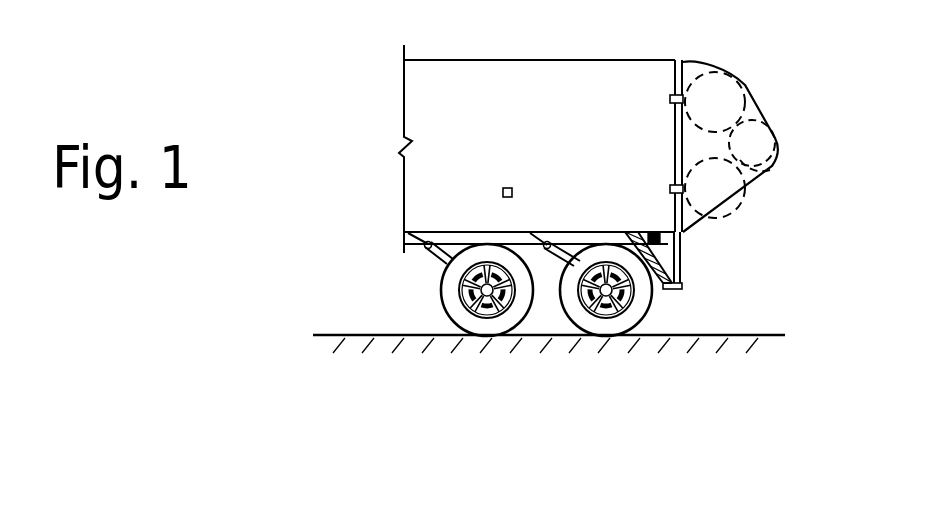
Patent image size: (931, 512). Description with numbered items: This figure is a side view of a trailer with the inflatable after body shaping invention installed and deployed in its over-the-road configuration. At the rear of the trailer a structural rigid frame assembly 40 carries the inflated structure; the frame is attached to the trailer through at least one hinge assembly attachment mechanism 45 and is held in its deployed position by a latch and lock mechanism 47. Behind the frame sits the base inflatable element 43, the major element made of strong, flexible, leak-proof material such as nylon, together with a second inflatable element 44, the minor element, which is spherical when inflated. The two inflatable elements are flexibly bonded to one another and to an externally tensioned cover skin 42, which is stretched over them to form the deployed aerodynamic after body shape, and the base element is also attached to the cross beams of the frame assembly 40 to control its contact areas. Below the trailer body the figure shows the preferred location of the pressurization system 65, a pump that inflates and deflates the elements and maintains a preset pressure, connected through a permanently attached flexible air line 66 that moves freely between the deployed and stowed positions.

The structural rigid frame assembly 40 is at (675, 63).
The externally tensioned cover skin 42 is at (762, 118).
The base inflatable element 43 is at (696, 77).
The second inflatable element 44 is at (752, 178).
The hinge assembly attachment mechanism 45 is at (669, 99).
The latch and lock mechanism 47 is at (512, 191).
The pressurization system 65 is at (677, 268).
The flexible air line 66 is at (666, 238).